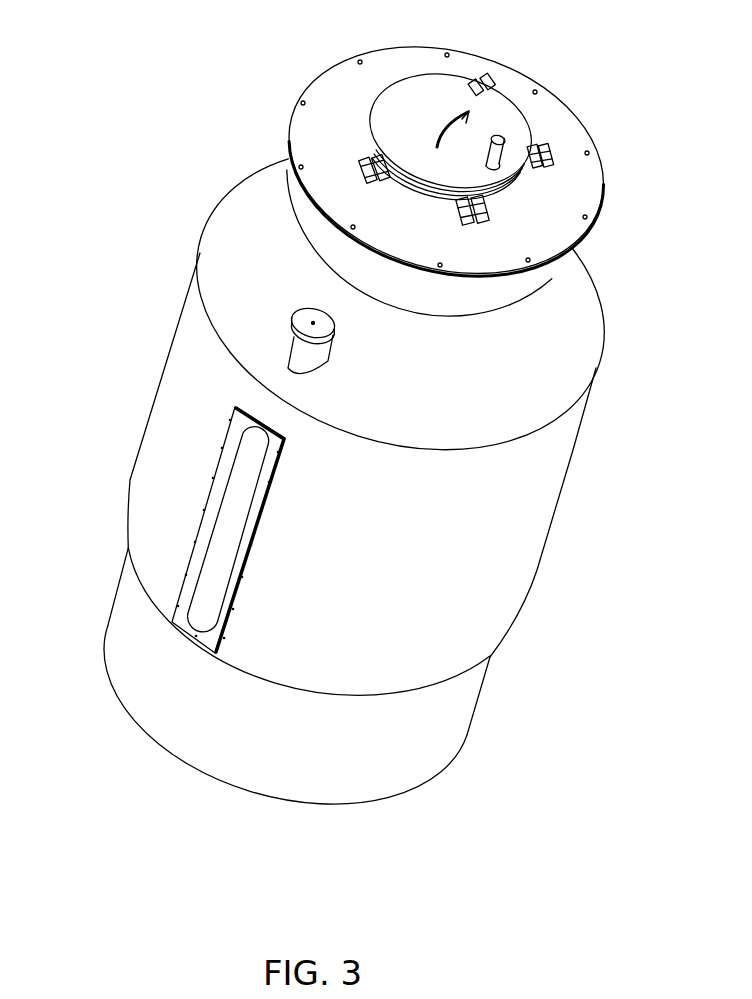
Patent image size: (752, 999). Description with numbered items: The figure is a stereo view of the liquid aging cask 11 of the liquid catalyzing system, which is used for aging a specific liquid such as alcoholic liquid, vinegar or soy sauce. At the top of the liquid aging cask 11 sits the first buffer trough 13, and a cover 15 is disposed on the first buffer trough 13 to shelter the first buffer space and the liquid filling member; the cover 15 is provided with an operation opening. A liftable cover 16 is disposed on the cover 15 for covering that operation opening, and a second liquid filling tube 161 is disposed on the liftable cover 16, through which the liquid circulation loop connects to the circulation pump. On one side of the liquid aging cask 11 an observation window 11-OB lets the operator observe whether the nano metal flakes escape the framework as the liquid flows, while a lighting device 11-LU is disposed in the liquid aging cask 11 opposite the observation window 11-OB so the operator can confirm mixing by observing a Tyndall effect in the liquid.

The liquid aging cask 11 is at (530, 580).
The lighting device 11-LU is at (287, 338).
The observation window 11-OB is at (245, 482).
The first buffer trough 13 is at (540, 284).
The cover 15 is at (598, 199).
The liftable cover 16 is at (325, 70).
The second liquid filling tube 161 is at (500, 157).